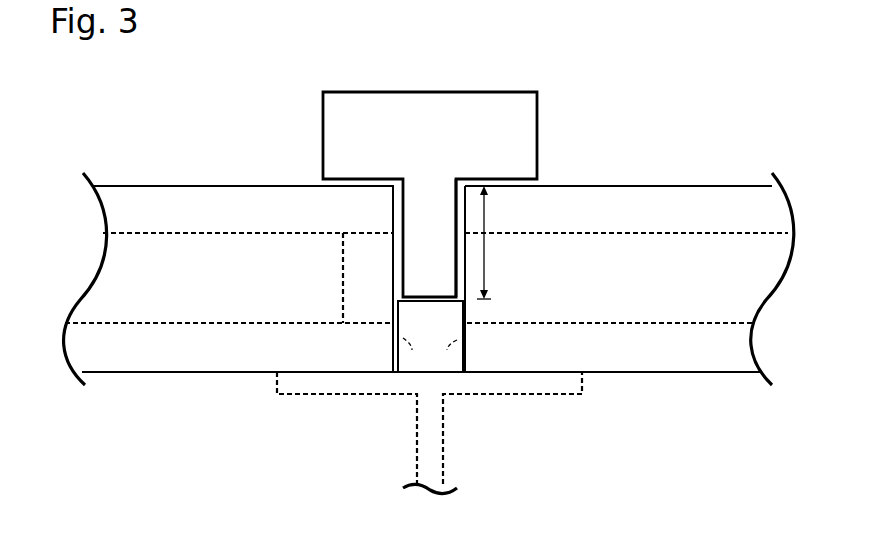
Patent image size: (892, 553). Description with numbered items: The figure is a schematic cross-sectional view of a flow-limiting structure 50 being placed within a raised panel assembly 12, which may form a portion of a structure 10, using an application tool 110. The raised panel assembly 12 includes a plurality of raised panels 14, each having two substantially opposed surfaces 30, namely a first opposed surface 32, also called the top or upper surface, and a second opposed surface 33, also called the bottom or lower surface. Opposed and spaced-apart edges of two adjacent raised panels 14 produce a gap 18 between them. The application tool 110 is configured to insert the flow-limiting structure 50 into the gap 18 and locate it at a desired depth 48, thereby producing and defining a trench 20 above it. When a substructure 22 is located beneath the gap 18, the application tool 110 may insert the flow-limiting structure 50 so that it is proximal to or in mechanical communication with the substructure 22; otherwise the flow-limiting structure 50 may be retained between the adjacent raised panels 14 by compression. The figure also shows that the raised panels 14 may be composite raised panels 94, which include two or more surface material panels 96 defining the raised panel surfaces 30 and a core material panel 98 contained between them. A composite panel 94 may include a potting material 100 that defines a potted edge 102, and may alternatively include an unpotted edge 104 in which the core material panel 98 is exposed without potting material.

The structure 10 is at (745, 26).
The raised panel assembly 12 is at (716, 66).
The raised panels 14 is at (112, 164).
The gap 18 is at (390, 220).
The trench 20 is at (460, 190).
The substructure 22 is at (422, 480).
The opposed surfaces 30 is at (182, 180).
The first opposed surface 32 is at (278, 186).
The second opposed surface 33 is at (237, 373).
The desired depth 48 is at (487, 250).
The flow-limiting structure 50 is at (418, 333).
The composite raised panels 94 is at (142, 176).
The surface material panels 96 is at (207, 203).
The core material panel 98 is at (141, 305).
The potting material 100 is at (357, 248).
The potted edge 102 is at (412, 348).
The unpotted edge 104 is at (447, 345).
The application tool 110 is at (343, 104).